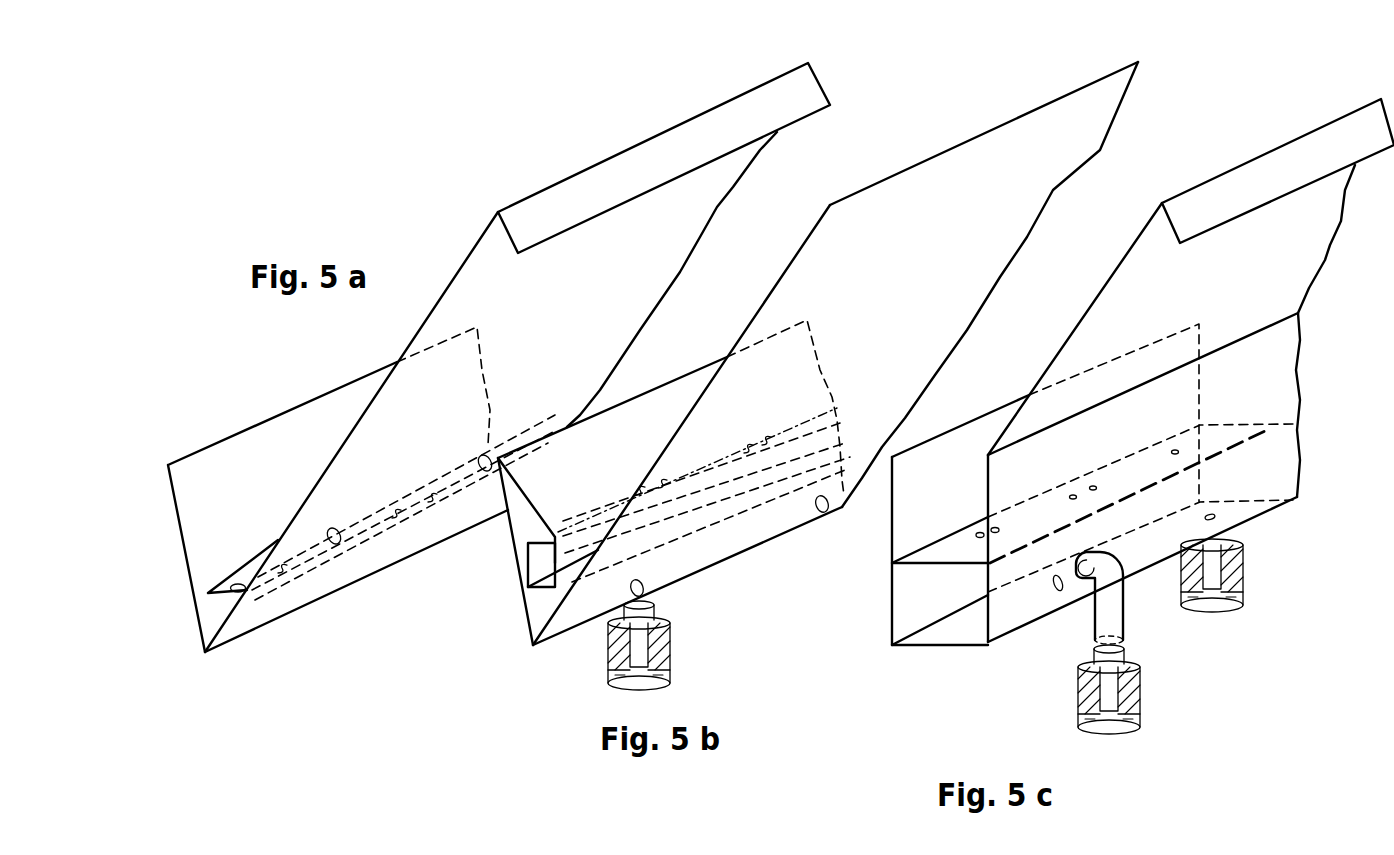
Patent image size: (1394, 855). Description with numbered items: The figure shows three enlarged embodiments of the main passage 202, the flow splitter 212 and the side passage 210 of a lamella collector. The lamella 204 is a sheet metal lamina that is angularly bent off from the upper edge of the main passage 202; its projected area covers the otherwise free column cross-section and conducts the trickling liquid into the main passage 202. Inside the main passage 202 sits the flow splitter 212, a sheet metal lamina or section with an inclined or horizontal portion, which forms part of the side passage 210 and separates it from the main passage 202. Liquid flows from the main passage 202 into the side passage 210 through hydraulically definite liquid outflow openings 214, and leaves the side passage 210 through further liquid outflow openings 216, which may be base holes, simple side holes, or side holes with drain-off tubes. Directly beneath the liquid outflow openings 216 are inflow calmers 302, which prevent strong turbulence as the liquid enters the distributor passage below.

In FIG. 5a, the main passage 202 is at (237, 515).
In FIG. 5b, the main passage 202 is at (825, 512).
In FIG. 5c, the main passage 202 is at (953, 500).
In FIG. 5a, the lamella 204 is at (695, 229).
In FIG. 5b, the lamella 204 is at (952, 216).
In FIG. 5c, the lamella 204 is at (1300, 246).
In FIG. 5b, the side passage 210 is at (527, 522).
In FIG. 5c, the side passage 210 is at (960, 595).
In FIG. 5a, the flow splitter 212 is at (253, 565).
In FIG. 5b, the flow splitter 212 is at (545, 588).
In FIG. 5c, the flow splitter 212 is at (912, 550).
In FIG. 5a, the liquid outflow openings 214 is at (237, 590).
In FIG. 5b, the liquid outflow openings 214 is at (707, 473).
In FIG. 5c, the liquid outflow openings 214 is at (1073, 497).
In FIG. 5a, the liquid outflow openings 216 is at (337, 545).
In FIG. 5b, the liquid outflow openings 216 is at (650, 588).
In FIG. 5c, the liquid outflow openings 216 is at (1057, 590).
In FIG. 5b, the inflow calmer 302 is at (668, 657).
In FIG. 5c, the inflow calmer 302 is at (1140, 710).